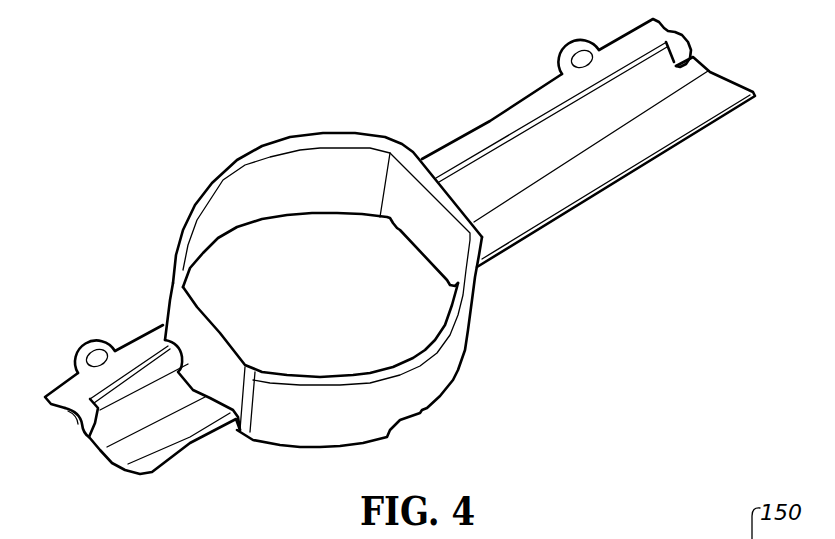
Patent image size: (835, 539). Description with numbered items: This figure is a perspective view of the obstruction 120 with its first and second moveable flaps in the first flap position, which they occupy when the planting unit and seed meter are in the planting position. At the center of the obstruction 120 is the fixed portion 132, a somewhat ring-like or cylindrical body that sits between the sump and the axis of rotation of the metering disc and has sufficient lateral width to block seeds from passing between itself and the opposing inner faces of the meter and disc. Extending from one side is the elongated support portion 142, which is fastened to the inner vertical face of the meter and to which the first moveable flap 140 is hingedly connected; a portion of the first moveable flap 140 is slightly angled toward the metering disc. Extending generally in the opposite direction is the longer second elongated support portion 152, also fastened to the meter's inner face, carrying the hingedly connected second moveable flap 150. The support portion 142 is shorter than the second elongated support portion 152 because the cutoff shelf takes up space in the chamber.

The obstruction 120 is at (594, 312).
The fixed portion 132 is at (423, 390).
The first moveable flap 140 is at (127, 447).
The elongated support portion 142 is at (53, 398).
The second moveable flap 150 is at (692, 68).
The second elongated support portion 152 is at (513, 112).